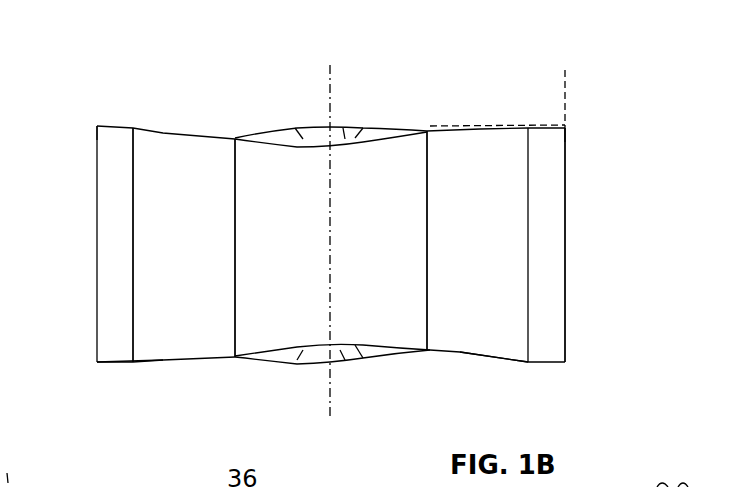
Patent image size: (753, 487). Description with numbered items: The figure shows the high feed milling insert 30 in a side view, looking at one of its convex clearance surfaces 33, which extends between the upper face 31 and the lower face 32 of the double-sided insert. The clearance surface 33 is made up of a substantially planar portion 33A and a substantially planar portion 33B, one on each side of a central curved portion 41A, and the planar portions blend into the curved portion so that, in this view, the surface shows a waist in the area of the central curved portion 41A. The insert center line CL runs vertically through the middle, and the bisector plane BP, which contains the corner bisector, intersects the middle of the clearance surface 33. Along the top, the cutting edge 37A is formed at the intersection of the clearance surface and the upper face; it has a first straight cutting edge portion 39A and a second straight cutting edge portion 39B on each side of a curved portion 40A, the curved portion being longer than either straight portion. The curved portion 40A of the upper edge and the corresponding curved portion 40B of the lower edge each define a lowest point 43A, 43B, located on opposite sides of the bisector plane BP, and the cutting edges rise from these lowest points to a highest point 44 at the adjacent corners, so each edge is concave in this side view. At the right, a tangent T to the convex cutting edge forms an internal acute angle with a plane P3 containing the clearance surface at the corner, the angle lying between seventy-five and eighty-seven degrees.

The high feed milling insert 30 is at (197, 90).
The upper face 31 is at (385, 115).
The lower face 32 is at (379, 373).
The clearance surface 33 is at (565, 247).
The substantially planar portion 33A is at (500, 249).
The substantially planar portion 33B is at (205, 249).
The cutting edge 37A is at (513, 125).
The first straight cutting edge portion 39A is at (155, 362).
The second straight cutting edge portion 39B is at (163, 133).
The curved cutting edge portion 40A is at (345, 133).
The curved cutting edge portion 40B is at (320, 360).
The central curved portion 41A is at (378, 249).
The lowest point 43A is at (293, 128).
The lowest point 43B is at (343, 360).
The highest point 44 is at (97, 126).
The bisector plane BP is at (330, 192).
The insert center line CL is at (330, 70).
The tangent T is at (500, 123).
The plane P3 is at (565, 78).